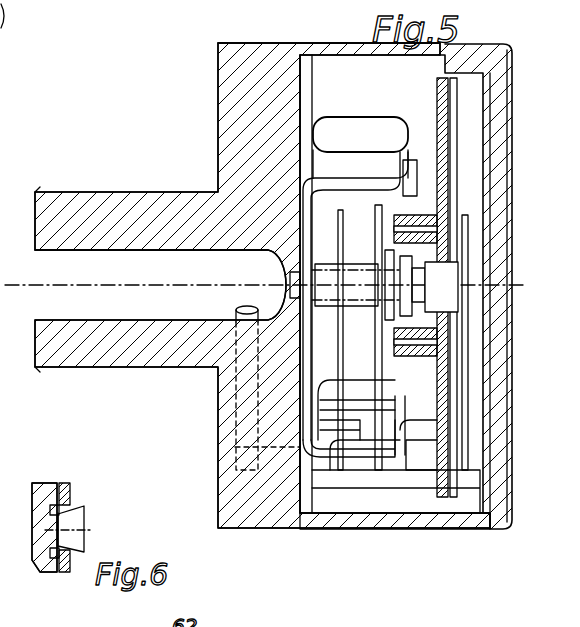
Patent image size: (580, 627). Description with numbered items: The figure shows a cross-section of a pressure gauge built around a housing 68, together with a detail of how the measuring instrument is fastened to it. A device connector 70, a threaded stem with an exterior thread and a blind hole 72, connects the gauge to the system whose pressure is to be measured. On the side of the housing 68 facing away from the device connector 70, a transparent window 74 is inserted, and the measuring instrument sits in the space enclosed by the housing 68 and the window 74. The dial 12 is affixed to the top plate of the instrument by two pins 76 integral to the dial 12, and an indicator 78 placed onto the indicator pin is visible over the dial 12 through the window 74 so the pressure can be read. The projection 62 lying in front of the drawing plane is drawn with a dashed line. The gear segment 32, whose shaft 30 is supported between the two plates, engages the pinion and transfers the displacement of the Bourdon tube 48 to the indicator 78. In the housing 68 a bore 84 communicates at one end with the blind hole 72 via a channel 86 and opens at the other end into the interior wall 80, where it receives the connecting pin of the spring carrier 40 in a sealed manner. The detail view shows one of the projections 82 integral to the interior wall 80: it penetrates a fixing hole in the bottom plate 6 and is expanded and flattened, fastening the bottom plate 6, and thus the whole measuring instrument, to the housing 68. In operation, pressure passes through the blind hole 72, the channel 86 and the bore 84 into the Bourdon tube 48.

In FIG. 5, the interior wall 80 is at (312, 86).
In FIG. 5, the housing 68 is at (214, 127).
In FIG. 6, the housing 68 is at (44, 488).
In FIG. 5, the Bourdon tube 48 is at (380, 115).
In FIG. 5, the transparent window 74 is at (512, 103).
In FIG. 5, the device connector 70 is at (82, 218).
In FIG. 5, the blind hole 72 is at (48, 255).
In FIG. 5, the dial 12 is at (450, 168).
In FIG. 5, the pins 76 is at (437, 232).
In FIG. 5, the indicator 78 is at (468, 328).
In FIG. 5, the projection 62 is at (430, 378).
In FIG. 5, the shaft 30 is at (445, 443).
In FIG. 5, the channel 86 is at (212, 405).
In FIG. 5, the bore 84 is at (236, 452).
In FIG. 5, the gear segment 32 is at (330, 400).
In FIG. 5, the spring carrier 40 is at (358, 492).
In FIG. 6, the bottom plate 6 is at (72, 492).
In FIG. 6, the projections 82 is at (86, 524).